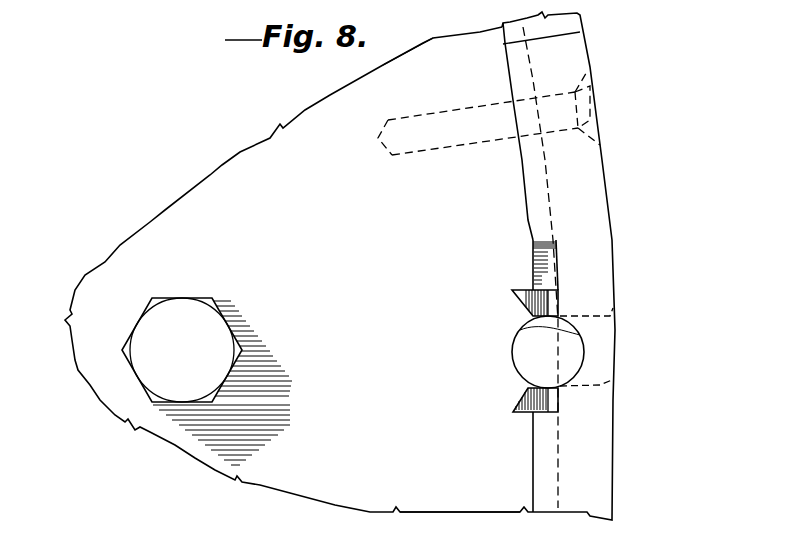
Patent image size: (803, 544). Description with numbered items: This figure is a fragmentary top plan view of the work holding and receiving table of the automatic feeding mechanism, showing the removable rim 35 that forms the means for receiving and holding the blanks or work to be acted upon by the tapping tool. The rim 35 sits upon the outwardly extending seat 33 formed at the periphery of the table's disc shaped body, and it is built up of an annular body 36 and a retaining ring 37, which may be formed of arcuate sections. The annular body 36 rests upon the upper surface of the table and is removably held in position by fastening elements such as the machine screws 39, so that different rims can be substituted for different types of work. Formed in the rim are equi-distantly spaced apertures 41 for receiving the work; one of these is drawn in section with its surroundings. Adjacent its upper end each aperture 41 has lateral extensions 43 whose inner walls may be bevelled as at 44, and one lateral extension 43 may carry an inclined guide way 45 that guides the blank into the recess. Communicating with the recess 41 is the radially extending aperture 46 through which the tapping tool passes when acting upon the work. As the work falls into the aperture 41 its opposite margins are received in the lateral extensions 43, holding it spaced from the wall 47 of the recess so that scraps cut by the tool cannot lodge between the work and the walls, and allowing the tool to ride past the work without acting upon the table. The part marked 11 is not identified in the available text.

The bracket body 11 is at (240, 188).
The outwardly extending seat 33 is at (580, 98).
The rim 35 is at (482, 488).
The annular body 36 is at (428, 70).
The retaining ring 37 is at (583, 198).
The machine screws 39 is at (178, 345).
The apertures 41 is at (572, 329).
The lateral extensions 43 is at (568, 395).
The bevelled inner walls 44 is at (520, 410).
The inclined guide way 45 is at (542, 272).
The radially extending aperture 46 is at (612, 374).
The wall 47 is at (548, 386).